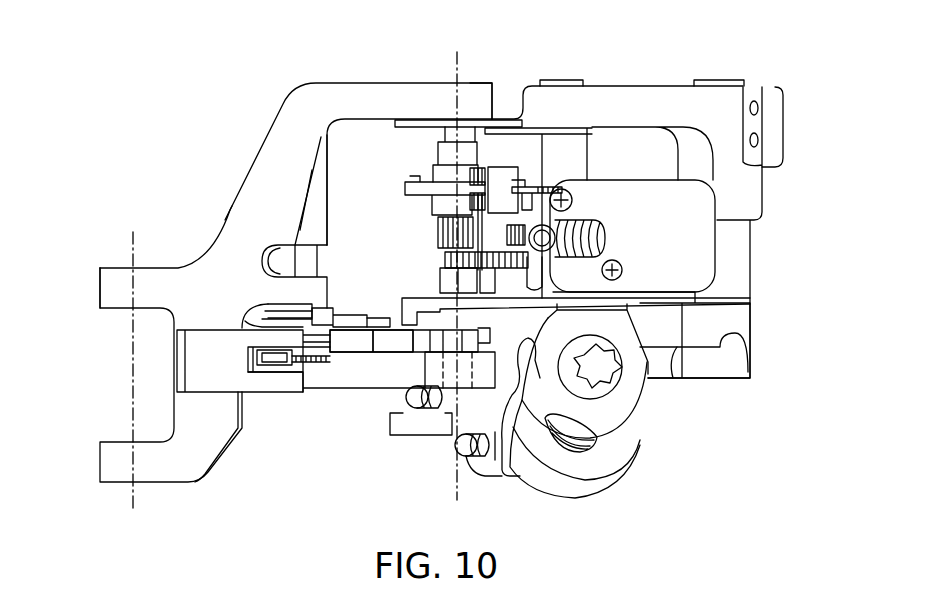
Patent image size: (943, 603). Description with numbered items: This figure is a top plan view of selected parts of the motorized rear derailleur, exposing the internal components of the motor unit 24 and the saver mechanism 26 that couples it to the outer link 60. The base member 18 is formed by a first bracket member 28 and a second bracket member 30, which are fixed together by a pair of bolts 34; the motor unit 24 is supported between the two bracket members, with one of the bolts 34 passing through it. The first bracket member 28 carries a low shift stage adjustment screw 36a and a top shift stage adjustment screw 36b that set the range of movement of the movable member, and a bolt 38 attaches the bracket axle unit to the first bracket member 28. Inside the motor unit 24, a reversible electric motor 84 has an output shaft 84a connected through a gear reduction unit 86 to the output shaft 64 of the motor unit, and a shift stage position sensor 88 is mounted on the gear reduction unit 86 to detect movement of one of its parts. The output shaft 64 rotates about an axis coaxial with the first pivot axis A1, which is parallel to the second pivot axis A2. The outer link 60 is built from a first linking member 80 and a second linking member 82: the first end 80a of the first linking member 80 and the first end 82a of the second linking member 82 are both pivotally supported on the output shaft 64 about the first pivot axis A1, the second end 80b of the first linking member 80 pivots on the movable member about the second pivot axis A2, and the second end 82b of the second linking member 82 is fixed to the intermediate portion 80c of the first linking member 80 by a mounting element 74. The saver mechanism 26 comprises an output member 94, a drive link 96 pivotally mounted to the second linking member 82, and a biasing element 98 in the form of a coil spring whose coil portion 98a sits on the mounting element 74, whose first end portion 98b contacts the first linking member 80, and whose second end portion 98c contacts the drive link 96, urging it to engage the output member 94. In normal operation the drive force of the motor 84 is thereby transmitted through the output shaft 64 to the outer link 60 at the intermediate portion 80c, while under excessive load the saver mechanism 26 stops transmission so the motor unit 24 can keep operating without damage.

The base member 18 is at (636, 86).
The motor unit 24 is at (355, 187).
The saver mechanism 26 is at (275, 308).
The first bracket member 28 is at (753, 327).
The second bracket member 30 is at (752, 85).
The bolts 34 is at (562, 78).
The low shift stage adjustment screw 36a is at (428, 410).
The top shift stage adjustment screw 36b is at (480, 460).
The bolt 38 is at (620, 374).
The outer link 60 is at (228, 213).
The output shaft 64 is at (440, 133).
The mounting element 74 is at (318, 258).
The first linking member 80 is at (275, 128).
The first end 80a is at (487, 80).
The second end 80b is at (118, 268).
The intermediate portion 80c is at (312, 237).
The second linking member 82 is at (350, 388).
The first end 82a is at (484, 375).
The second end 82b is at (295, 395).
The motor 84 is at (645, 185).
The output shaft of the motor 84a is at (585, 232).
The gear reduction unit 86 is at (432, 229).
The shift stage position sensor 88 is at (548, 182).
The output member 94 is at (347, 352).
The drive link 96 is at (388, 324).
The biasing element 98 is at (260, 320).
The coil portion 98a is at (300, 372).
The first end portion 98b is at (257, 364).
The second end portion 98c is at (320, 312).
The first pivot axis A1 is at (470, 68).
The second pivot axis A2 is at (133, 506).